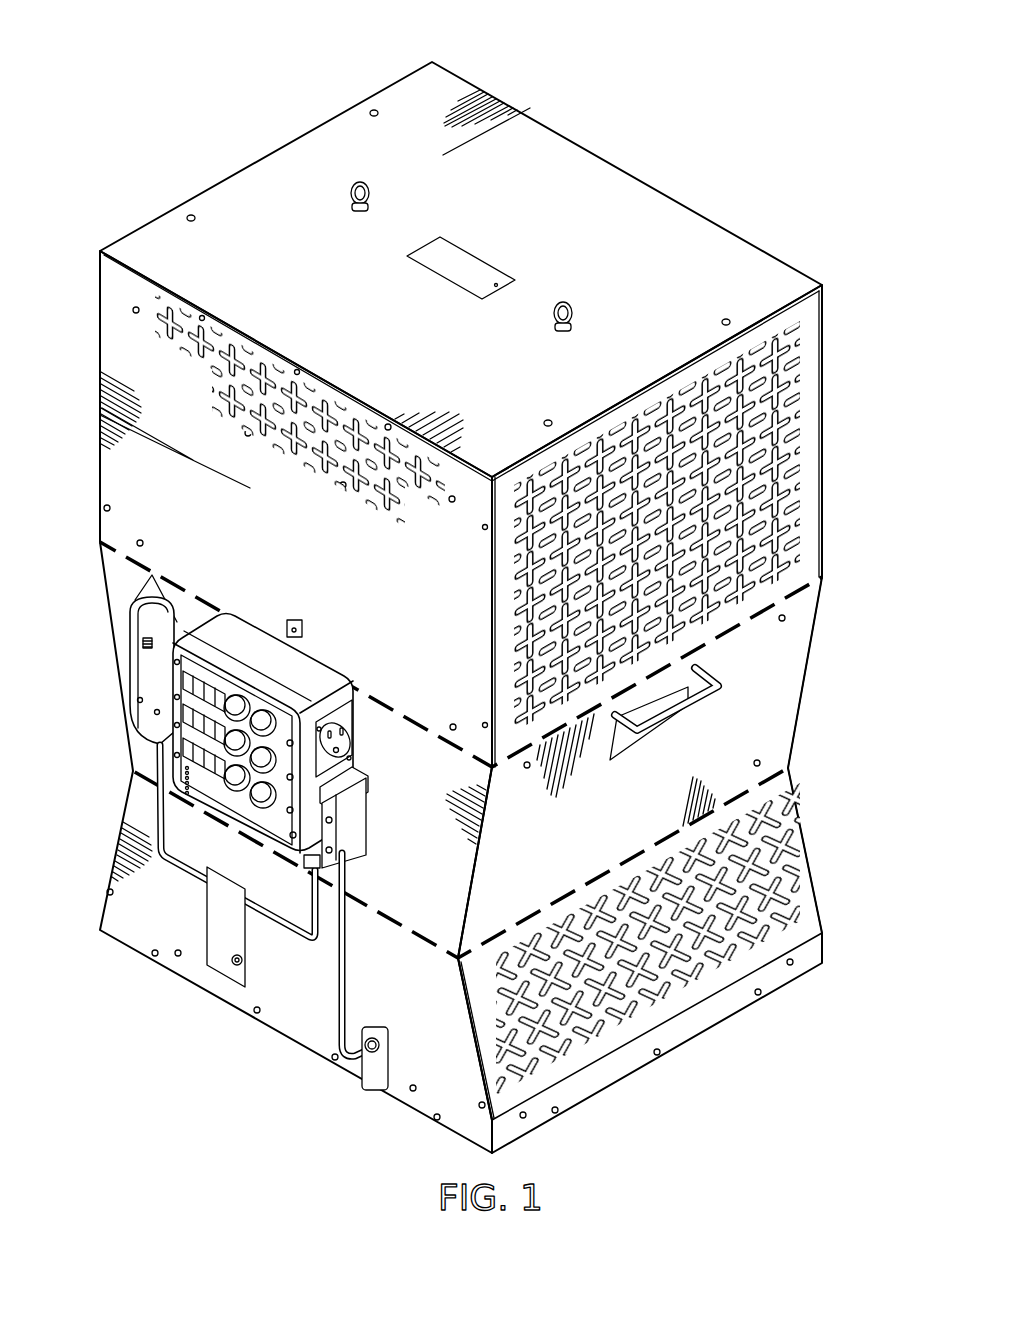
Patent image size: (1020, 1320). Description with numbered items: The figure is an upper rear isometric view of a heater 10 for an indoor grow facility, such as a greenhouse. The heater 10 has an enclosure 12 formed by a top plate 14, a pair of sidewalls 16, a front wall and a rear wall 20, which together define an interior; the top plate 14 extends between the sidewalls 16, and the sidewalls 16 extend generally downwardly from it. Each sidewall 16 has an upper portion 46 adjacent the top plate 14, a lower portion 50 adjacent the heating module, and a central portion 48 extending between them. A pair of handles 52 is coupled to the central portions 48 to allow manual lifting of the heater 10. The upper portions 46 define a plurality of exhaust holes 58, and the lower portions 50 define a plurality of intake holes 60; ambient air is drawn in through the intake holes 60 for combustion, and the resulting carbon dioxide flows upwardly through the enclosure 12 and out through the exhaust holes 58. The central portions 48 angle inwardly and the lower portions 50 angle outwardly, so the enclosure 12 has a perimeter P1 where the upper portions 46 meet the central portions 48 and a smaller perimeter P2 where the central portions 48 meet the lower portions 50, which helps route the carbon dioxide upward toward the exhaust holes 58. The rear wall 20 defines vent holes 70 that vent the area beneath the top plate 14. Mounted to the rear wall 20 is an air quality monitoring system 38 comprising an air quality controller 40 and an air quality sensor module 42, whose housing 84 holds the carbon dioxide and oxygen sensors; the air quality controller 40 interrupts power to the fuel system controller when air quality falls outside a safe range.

The heater 10 is at (155, 68).
The enclosure 12 is at (853, 390).
The top plate 14 is at (268, 161).
The sidewalls 16 is at (837, 475).
The rear wall 20 is at (118, 470).
The air quality monitoring system 38 is at (233, 586).
The air quality controller 40 is at (265, 632).
The air quality sensor module 42 is at (116, 662).
The upper portion 46 is at (812, 320).
The central portion 48 is at (797, 675).
The lower portion 50 is at (797, 853).
The handles 52 is at (700, 712).
The exhaust holes 58 is at (793, 373).
The intake holes 60 is at (690, 995).
The vent holes 70 is at (225, 396).
The housing 84 is at (132, 647).
The perimeter P1 is at (403, 704).
The perimeter P2 is at (368, 893).